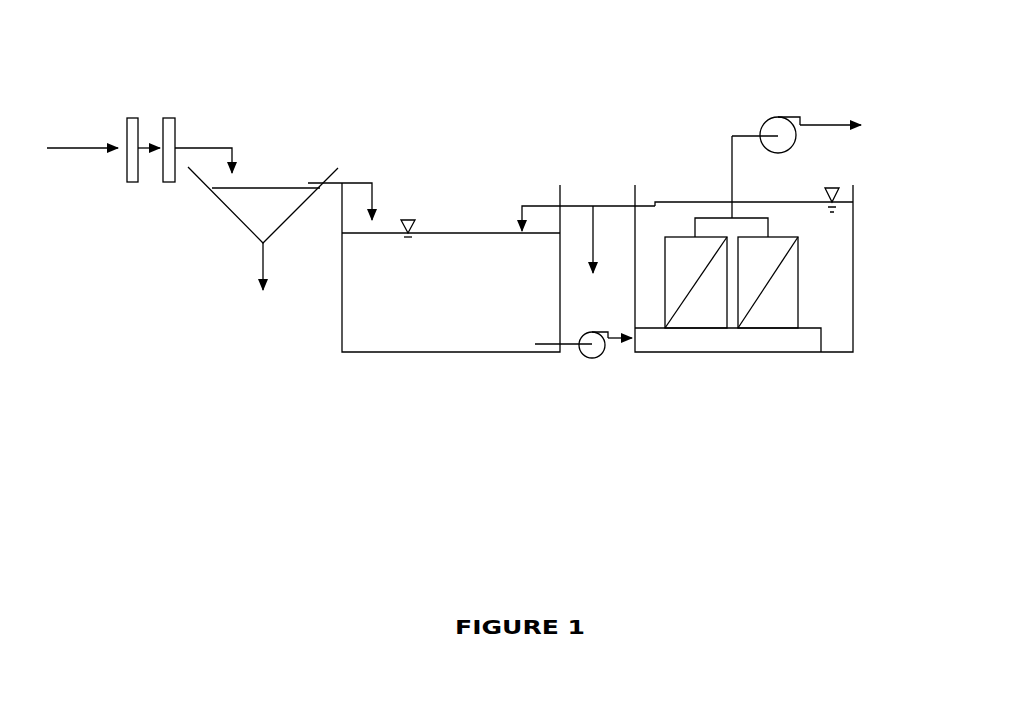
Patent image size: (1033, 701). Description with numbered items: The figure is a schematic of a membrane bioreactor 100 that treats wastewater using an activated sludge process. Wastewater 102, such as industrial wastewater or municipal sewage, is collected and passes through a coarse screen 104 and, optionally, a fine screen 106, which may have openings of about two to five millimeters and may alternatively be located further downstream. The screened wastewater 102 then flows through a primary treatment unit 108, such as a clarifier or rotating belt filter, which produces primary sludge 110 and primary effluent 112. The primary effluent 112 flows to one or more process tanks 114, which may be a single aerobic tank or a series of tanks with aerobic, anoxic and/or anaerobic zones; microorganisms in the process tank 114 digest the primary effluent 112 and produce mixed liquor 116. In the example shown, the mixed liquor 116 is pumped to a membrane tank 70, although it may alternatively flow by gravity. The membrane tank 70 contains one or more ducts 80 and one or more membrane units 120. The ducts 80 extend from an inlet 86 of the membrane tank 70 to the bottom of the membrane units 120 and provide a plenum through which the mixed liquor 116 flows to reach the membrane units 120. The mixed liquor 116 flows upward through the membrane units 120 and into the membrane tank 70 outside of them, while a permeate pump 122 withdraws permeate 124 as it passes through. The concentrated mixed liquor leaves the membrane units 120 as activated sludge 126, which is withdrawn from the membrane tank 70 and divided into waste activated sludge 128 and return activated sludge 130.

The membrane bioreactor 100 is at (250, 396).
The wastewater 102 is at (87, 145).
The coarse screen 104 is at (132, 118).
The fine screen 106 is at (173, 118).
The primary treatment unit 108 is at (232, 215).
The primary sludge 110 is at (263, 257).
The primary effluent 112 is at (355, 182).
The process tank 114 is at (422, 355).
The mixed liquor 116 is at (572, 353).
The waste activated sludge 128 is at (593, 205).
The return activated sludge 130 is at (545, 205).
The inlet 86 is at (630, 343).
The membrane tank 70 is at (855, 332).
The duct 80 is at (792, 340).
The membrane unit 120 is at (793, 278).
The activated sludge 126 is at (779, 231).
The permeate pump 122 is at (782, 117).
The permeate outlet 124 is at (838, 116).